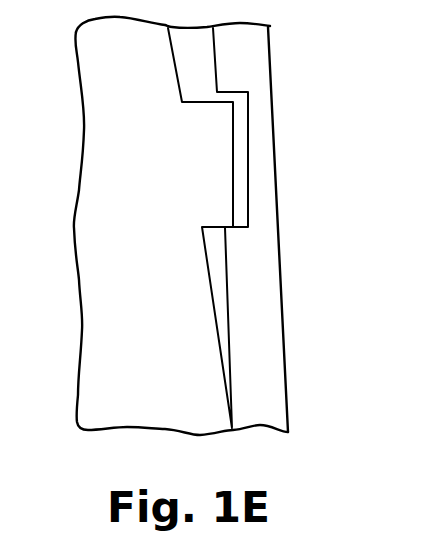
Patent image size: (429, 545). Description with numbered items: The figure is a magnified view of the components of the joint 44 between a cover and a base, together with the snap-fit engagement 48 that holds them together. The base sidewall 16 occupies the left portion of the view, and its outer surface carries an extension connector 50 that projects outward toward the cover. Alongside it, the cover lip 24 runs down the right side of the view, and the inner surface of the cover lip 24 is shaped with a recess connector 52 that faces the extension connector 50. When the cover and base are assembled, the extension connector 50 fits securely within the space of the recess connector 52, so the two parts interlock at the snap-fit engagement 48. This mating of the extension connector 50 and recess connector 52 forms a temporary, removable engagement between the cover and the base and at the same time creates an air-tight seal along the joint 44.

The base sidewall 16 is at (120, 312).
The cover lip 24 is at (252, 322).
The joint 44 is at (318, 287).
The snap-fit engagement 48 is at (248, 110).
The extension connector 50 is at (213, 167).
The recess connector 52 is at (242, 152).